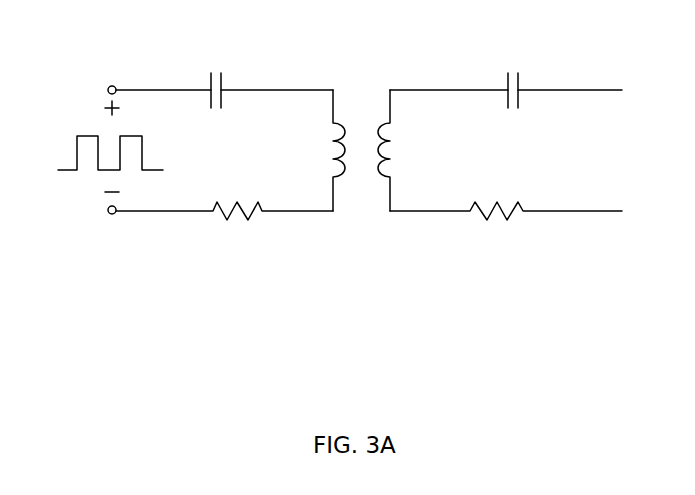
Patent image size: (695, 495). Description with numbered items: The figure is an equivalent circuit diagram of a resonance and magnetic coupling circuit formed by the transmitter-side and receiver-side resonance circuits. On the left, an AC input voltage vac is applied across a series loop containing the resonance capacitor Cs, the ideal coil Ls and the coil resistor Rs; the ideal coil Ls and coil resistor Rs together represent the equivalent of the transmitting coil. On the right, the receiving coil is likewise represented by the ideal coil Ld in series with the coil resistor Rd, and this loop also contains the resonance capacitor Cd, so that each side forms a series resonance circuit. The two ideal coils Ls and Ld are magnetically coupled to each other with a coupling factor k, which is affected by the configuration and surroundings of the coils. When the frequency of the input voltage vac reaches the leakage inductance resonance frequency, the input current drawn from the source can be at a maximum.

The input voltage vac is at (97, 150).
The resonance capacitor Cs is at (224, 75).
The ideal coil Ls is at (321, 150).
The coil resistor Rs is at (224, 194).
The coupling factor k is at (358, 65).
The resonance capacitor Cd is at (506, 75).
The ideal coil Ld is at (399, 150).
The coil resistor Rd is at (506, 194).